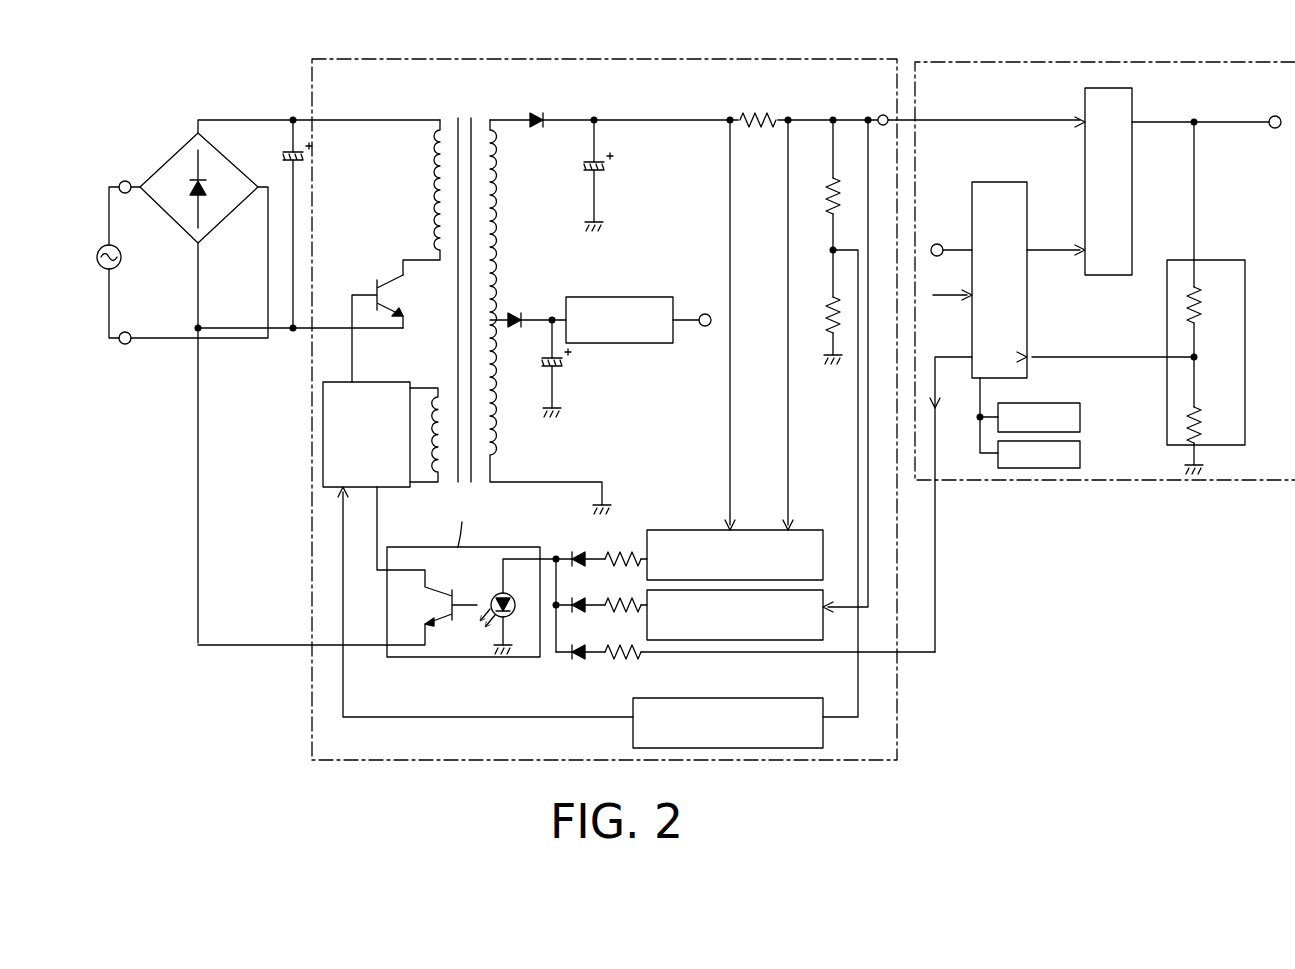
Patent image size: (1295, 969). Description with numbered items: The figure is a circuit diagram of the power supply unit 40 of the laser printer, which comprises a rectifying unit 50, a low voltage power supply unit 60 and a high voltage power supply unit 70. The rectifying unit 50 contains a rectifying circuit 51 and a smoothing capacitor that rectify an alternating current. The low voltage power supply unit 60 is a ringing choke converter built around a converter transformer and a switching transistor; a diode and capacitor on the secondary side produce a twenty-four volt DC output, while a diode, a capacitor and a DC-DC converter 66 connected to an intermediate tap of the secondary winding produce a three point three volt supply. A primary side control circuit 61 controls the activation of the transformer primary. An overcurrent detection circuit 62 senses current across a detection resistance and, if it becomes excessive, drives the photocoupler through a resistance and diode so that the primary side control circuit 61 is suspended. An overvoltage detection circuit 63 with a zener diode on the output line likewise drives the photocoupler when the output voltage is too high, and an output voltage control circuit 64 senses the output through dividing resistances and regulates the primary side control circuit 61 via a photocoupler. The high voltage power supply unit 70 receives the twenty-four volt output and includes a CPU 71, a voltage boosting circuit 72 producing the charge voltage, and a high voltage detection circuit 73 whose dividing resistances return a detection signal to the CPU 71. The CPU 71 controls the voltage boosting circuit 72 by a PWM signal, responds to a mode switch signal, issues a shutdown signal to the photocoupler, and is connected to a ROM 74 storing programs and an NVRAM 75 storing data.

The power supply unit 40 is at (1062, 644).
The rectifying unit 50 is at (174, 97).
The rectifying circuit 51 is at (167, 163).
The low voltage power supply unit 60 is at (462, 59).
The primary side control circuit 61 is at (380, 382).
The overcurrent detection circuit 62 is at (682, 530).
The overvoltage detection circuit 63 is at (827, 596).
The output voltage control circuit 64 is at (730, 698).
The DC-DC converter 66 is at (645, 297).
The high voltage power supply unit 70 is at (1105, 62).
The CPU 71 is at (1008, 182).
The voltage boosting circuit 72 is at (1085, 103).
The high voltage detection circuit 73 is at (1217, 260).
The ROM 74 is at (1081, 427).
The NVRAM 75 is at (1081, 462).